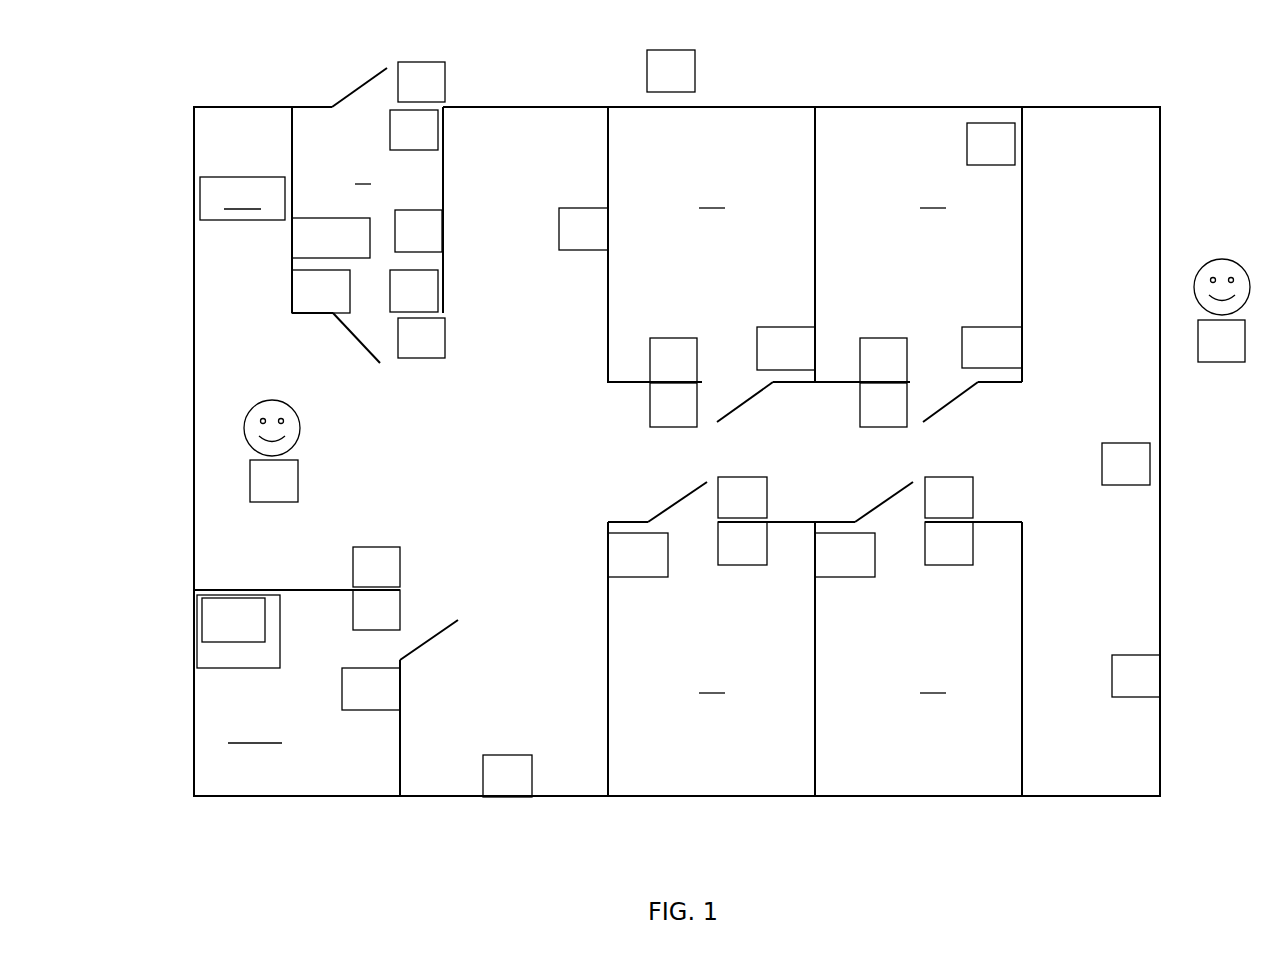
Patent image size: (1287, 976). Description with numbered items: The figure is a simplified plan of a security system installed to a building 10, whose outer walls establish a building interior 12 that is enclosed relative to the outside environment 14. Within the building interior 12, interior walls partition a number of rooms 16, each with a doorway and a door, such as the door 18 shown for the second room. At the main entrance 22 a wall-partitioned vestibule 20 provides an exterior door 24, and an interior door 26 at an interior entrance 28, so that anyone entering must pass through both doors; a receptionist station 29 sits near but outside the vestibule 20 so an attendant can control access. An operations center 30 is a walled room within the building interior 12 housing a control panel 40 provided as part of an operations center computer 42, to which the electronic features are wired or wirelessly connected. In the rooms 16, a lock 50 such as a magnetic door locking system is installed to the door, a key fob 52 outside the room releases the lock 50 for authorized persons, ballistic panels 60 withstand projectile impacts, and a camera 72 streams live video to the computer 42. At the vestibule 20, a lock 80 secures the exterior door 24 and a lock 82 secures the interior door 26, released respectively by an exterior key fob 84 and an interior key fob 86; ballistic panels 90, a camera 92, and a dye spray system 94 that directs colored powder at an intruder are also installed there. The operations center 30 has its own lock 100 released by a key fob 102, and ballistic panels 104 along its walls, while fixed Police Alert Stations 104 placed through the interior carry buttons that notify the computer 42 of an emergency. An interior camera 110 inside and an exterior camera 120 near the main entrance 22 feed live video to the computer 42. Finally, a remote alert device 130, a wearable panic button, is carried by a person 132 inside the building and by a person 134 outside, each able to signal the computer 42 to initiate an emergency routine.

The building 10 is at (122, 180).
The building interior 12 is at (515, 456).
The outside environment 14 is at (1077, 866).
The rooms 16 is at (785, 127).
The door 18 is at (952, 408).
The vestibule 20 is at (323, 183).
The main entrance 22 is at (375, 102).
The exterior door 24 is at (348, 92).
The interior door 26 is at (343, 332).
The interior entrance 28 is at (377, 325).
The receptionist station 29 is at (208, 213).
The operations center 30 is at (232, 772).
The control panel 40 is at (210, 612).
The operations center computer 42 is at (225, 670).
The lock 50 is at (877, 337).
The key fob 52 is at (858, 412).
The ballistic panels 60 is at (995, 325).
The camera 72 is at (995, 120).
The lock 80 is at (438, 128).
The lock 82 is at (440, 295).
The exterior key fob 84 is at (447, 75).
The interior key fob 86 is at (447, 353).
The ballistic panels 90 is at (300, 305).
The camera 92 is at (428, 220).
The dye spray system 94 is at (297, 245).
The lock 100 is at (390, 605).
The key fob 102 is at (395, 550).
The ballistic panels / Police Alert Station 104 is at (363, 715).
The interior camera 110 is at (1137, 478).
The exterior camera 120 is at (680, 70).
The remote alert device 130 is at (248, 478).
The person 132 is at (243, 425).
The person 134 is at (1247, 275).